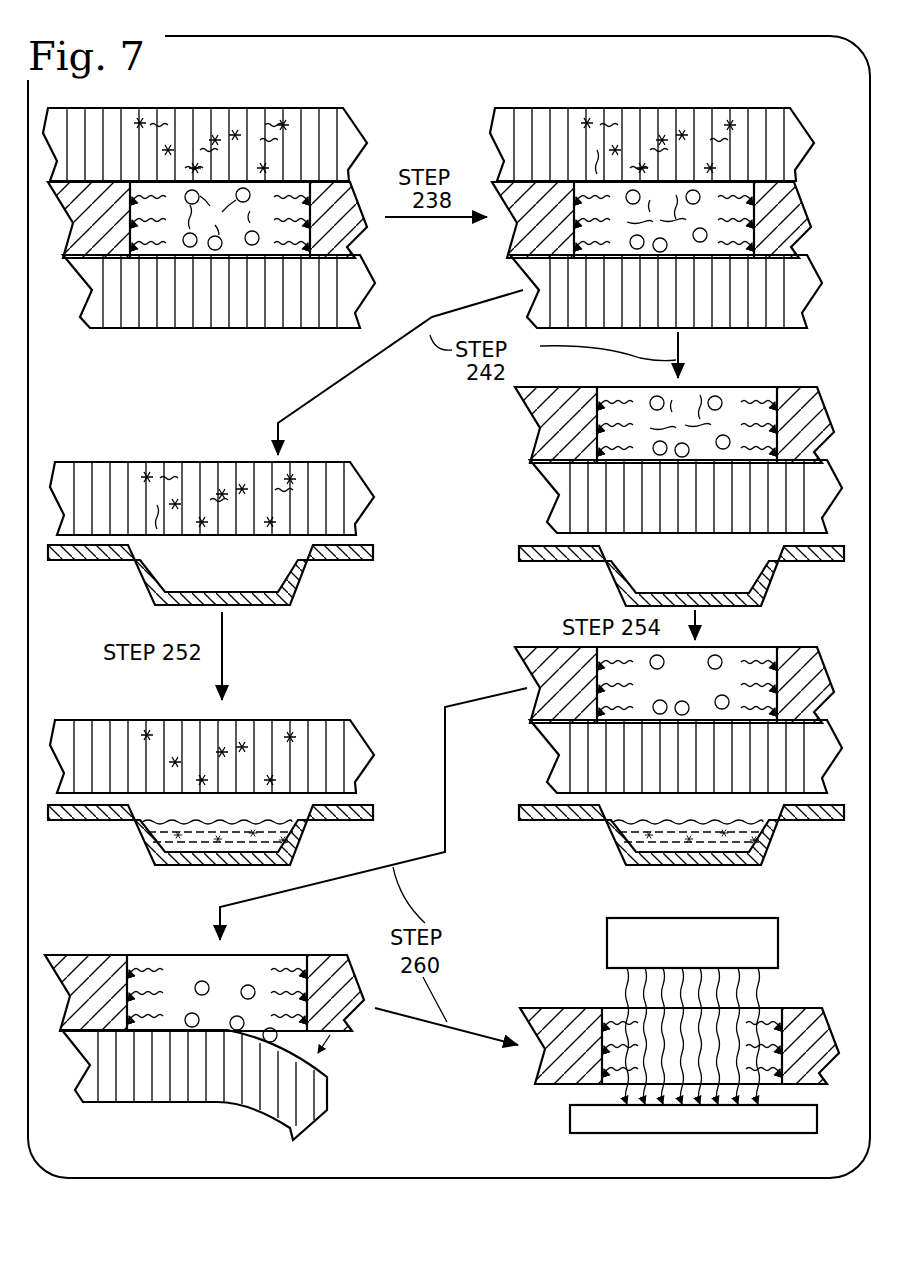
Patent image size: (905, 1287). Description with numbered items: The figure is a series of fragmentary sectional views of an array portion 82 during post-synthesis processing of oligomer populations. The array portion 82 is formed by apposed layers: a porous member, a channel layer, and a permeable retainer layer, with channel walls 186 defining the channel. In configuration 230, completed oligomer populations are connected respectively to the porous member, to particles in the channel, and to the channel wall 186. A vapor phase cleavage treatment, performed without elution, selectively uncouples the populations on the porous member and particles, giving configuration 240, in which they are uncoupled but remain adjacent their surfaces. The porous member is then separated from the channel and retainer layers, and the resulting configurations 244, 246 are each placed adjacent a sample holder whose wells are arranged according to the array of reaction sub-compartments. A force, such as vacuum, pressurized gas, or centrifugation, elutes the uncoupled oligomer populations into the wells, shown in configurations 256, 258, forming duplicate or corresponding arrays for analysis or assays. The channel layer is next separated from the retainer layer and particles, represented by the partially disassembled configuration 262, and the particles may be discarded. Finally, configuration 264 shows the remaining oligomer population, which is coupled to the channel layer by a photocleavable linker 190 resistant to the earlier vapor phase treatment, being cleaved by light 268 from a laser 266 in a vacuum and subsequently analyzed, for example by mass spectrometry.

The array portion 82 is at (357, 117).
The channel walls 186 is at (305, 243).
The linker 190 is at (760, 1052).
The configuration 230 is at (280, 97).
The configuration 240 is at (720, 100).
The configuration 244 is at (88, 458).
The configuration 246 is at (522, 438).
The configuration 256 is at (80, 710).
The configuration 258 is at (498, 649).
The configuration 262 is at (80, 952).
The configuration 264 is at (588, 941).
The laser 266 is at (780, 930).
The light 268 is at (625, 995).